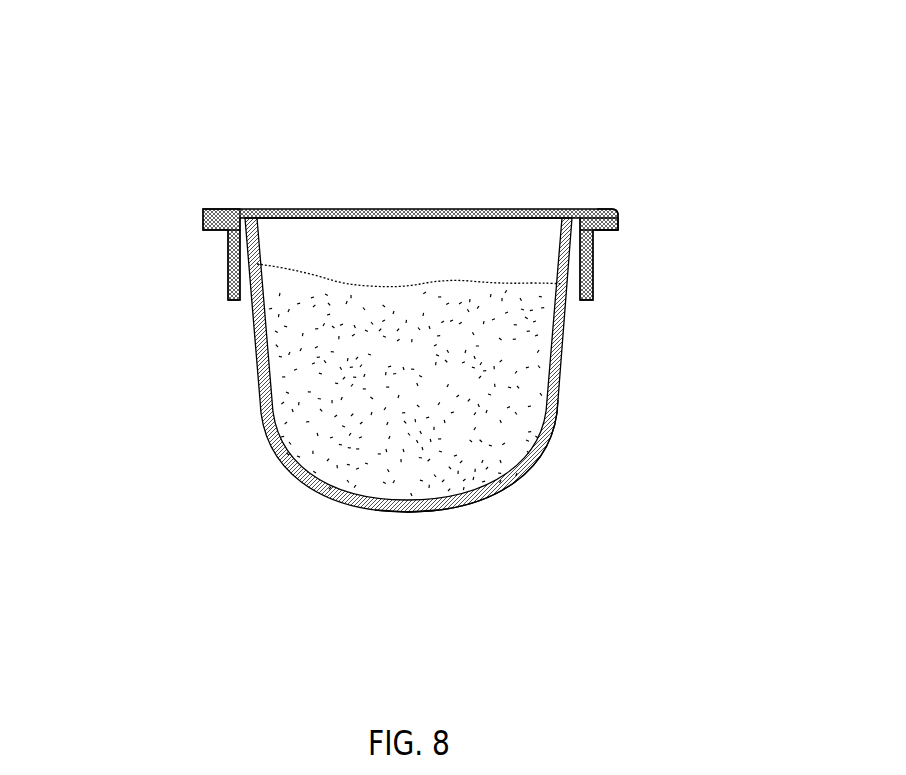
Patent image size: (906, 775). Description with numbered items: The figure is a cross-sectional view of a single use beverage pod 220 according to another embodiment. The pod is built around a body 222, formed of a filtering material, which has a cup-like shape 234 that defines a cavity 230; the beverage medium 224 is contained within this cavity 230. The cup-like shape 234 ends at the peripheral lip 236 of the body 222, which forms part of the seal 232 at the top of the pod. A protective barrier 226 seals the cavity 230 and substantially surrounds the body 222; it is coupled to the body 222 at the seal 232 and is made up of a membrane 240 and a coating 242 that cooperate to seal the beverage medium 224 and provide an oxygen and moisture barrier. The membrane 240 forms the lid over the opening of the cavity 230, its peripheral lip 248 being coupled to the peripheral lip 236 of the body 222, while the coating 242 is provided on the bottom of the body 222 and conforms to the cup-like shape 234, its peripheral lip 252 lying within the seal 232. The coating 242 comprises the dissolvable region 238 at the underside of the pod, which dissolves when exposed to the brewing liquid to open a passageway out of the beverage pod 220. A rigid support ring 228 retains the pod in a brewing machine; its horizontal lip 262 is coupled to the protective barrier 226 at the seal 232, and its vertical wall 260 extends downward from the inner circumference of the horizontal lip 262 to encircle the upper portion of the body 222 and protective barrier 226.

The beverage pod 220 is at (364, 112).
The body 222 is at (276, 350).
The beverage medium 224 is at (428, 371).
The protective barrier 226 is at (117, 147).
The support ring 228 is at (593, 347).
The cavity 230 is at (425, 251).
The seal 232 is at (708, 147).
The cup-like shape 234 is at (516, 486).
The peripheral lip 236 is at (619, 214).
The dissolvable region 238 is at (404, 524).
The membrane 240 is at (268, 212).
The coating 242 is at (250, 309).
The peripheral lip 248 is at (617, 211).
The peripheral lip 252 is at (619, 221).
The vertical wall 260 is at (587, 294).
The horizontal lip 262 is at (603, 230).